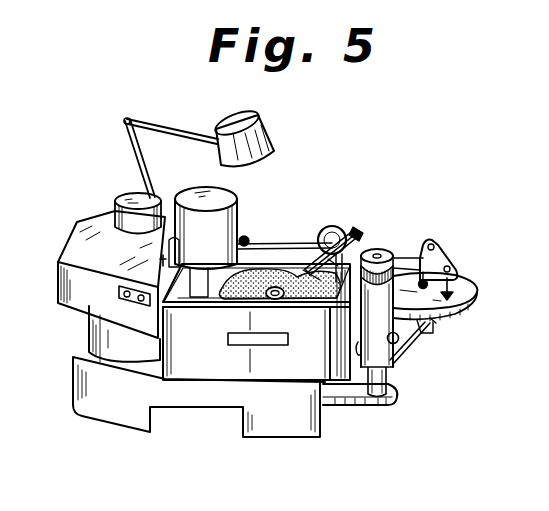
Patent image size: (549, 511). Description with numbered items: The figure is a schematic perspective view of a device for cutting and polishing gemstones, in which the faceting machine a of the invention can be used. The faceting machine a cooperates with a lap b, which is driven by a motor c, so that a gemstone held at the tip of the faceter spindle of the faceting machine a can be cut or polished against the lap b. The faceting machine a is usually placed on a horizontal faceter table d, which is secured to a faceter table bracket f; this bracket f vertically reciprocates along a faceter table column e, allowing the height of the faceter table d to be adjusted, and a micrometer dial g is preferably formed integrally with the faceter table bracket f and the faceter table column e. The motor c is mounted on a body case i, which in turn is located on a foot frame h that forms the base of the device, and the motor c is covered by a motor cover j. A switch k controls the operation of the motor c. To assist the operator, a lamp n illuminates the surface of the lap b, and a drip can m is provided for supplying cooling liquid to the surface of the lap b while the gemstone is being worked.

The lamp n is at (238, 121).
The motor cover j is at (67, 239).
The switch k is at (120, 290).
The motor c is at (97, 326).
The foot frame h is at (85, 383).
The body case i is at (282, 365).
The lap b is at (277, 270).
The drip can m is at (233, 213).
The faceting machine a is at (338, 232).
The micrometer dial g is at (381, 251).
The faceter table column e is at (392, 385).
The faceter table d is at (466, 274).
The faceter table bracket f is at (413, 348).